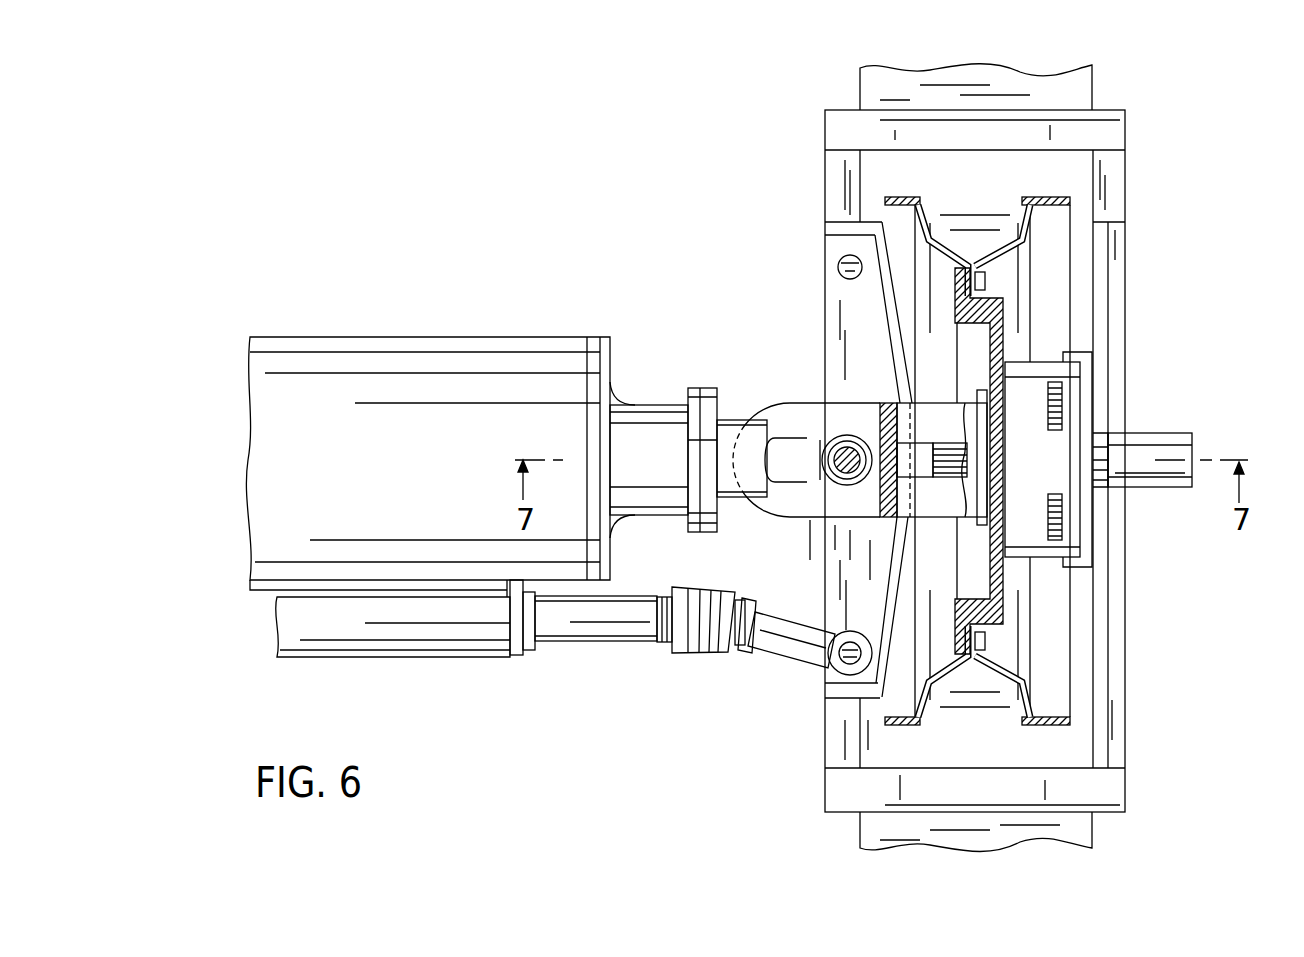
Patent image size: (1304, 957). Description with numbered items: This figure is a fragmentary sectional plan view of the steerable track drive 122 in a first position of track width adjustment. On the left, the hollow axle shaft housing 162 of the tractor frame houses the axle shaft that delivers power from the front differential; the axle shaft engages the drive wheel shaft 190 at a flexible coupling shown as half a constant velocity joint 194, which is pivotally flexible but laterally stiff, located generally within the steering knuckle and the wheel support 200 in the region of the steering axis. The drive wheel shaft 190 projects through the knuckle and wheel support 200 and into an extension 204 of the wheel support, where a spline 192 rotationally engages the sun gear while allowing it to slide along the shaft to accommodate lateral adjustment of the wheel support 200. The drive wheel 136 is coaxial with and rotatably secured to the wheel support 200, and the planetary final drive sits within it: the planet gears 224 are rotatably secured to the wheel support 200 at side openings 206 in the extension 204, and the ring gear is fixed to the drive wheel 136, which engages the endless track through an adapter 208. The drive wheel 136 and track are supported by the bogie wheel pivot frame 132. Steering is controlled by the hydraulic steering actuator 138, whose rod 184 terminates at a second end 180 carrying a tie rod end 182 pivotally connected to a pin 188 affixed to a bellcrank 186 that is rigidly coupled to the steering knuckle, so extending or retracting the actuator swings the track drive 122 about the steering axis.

The steerable track drive 122 is at (1022, 880).
The bogie wheel pivot frame 132 is at (1150, 826).
The drive wheel 136 is at (995, 300).
The steering actuator 138 is at (360, 632).
The axle shaft housing 162 is at (388, 472).
The second end 180 is at (795, 681).
The tie rod end 182 is at (847, 672).
The rod 184 is at (596, 648).
The bellcrank 186 is at (875, 700).
The pin 188 is at (858, 664).
The drive wheel shaft 190 is at (918, 425).
The spline 192 is at (948, 440).
The constant velocity joint 194 is at (840, 410).
The wheel support 200 is at (800, 522).
The extension 204 is at (1150, 432).
The side openings 206 is at (1092, 440).
The adapter 208 is at (1050, 198).
The planet gears 224 is at (1064, 404).